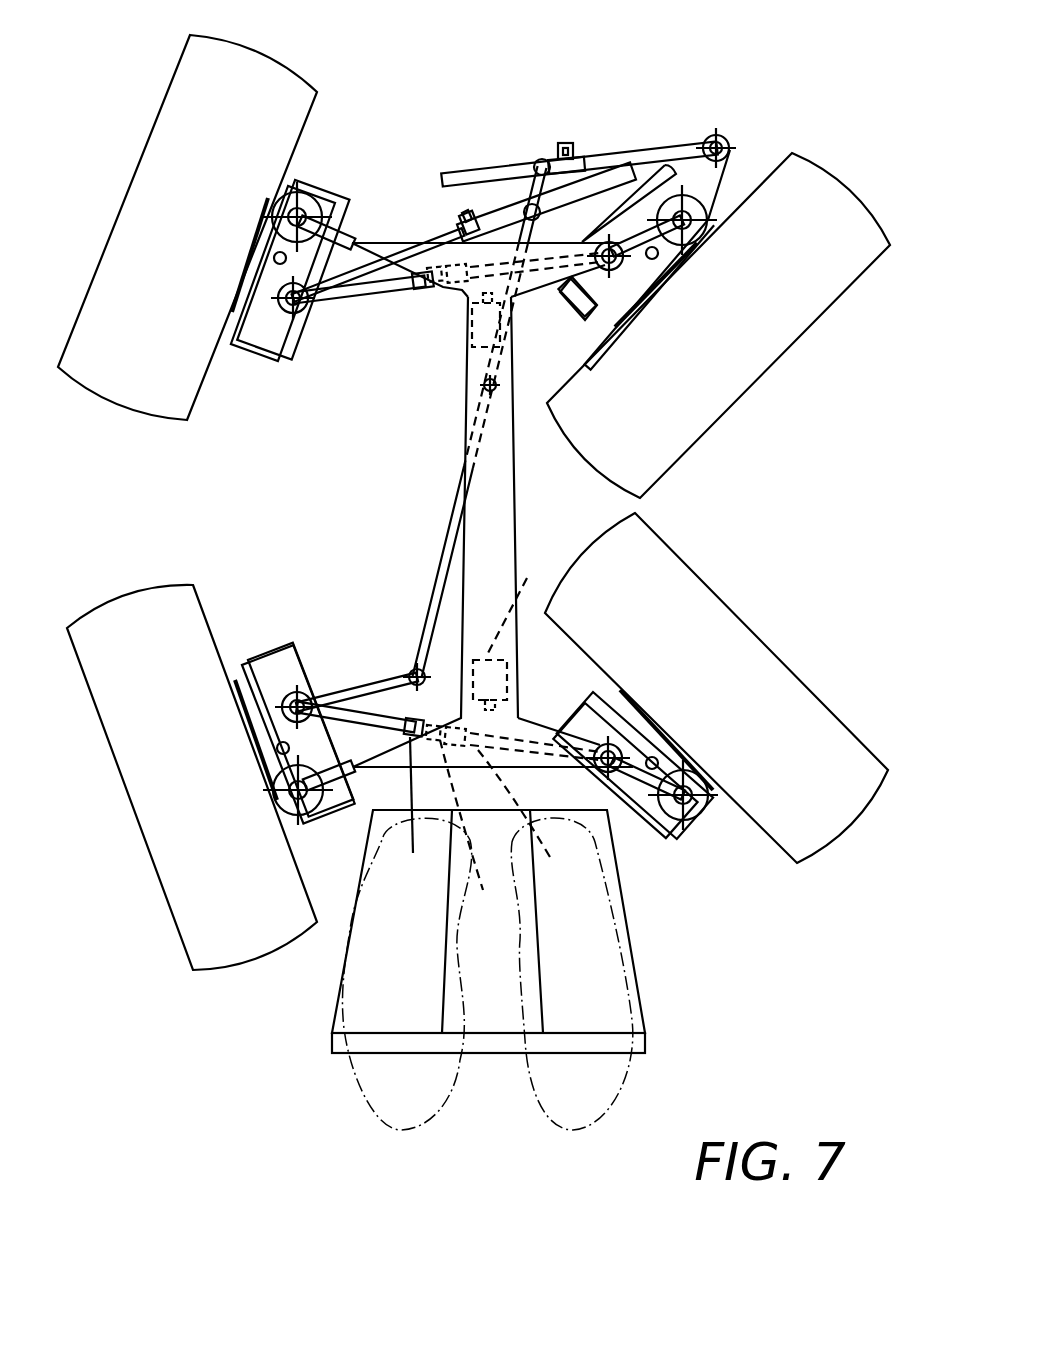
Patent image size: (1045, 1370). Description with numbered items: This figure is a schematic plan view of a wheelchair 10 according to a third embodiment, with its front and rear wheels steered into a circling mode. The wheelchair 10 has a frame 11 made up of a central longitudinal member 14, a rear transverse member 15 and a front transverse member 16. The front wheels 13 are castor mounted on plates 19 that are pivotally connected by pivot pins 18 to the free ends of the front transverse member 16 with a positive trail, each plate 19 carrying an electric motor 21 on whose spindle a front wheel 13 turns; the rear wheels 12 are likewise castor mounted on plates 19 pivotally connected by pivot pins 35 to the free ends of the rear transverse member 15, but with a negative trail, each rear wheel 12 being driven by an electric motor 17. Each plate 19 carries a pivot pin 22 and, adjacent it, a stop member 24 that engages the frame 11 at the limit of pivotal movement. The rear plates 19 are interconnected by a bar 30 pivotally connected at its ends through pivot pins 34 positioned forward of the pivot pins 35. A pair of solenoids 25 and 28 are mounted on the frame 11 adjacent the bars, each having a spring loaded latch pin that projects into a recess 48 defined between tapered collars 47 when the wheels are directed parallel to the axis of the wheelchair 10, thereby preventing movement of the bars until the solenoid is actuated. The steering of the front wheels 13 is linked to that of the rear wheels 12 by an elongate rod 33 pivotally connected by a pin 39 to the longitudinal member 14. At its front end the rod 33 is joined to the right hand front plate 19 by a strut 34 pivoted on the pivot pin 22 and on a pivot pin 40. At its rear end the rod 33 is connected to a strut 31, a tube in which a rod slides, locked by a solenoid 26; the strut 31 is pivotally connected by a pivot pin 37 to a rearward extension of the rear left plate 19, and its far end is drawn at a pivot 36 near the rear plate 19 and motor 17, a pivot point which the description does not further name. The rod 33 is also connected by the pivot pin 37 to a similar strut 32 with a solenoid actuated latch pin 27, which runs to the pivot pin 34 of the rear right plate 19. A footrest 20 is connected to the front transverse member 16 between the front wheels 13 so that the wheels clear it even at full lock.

The wheelchair 10 is at (790, 476).
The frame 11 is at (420, 499).
The rear wheels 12 is at (168, 132).
The front wheels 13 is at (198, 938).
The central longitudinal member 14 is at (495, 548).
The rear transverse member 15 is at (382, 238).
The front transverse member 16 is at (395, 758).
The electric motor 17 is at (652, 178).
The pivot pin 18 is at (290, 793).
The plate 19 is at (270, 345).
The footrest 20 is at (600, 1045).
The electric motor 21 is at (305, 665).
The pivot pin 22 is at (288, 704).
The stop member 24 is at (275, 748).
The solenoid 25 is at (523, 578).
The solenoid 26 is at (568, 140).
The solenoid actuated latch pin 27 is at (462, 212).
The solenoid 28 is at (470, 375).
The bar 30 is at (398, 292).
The strut 31 is at (474, 167).
The strut 32 is at (530, 205).
The elongate rod 33 is at (540, 160).
The strut / pivot pin 34 is at (305, 328).
The pivot pin 35 is at (305, 203).
The pivot 36 is at (722, 141).
The pivot pin 37 is at (540, 222).
The pin 39 is at (492, 395).
The pivot pin 40 is at (413, 670).
The tapered collars 47 is at (492, 812).
The recess 48 is at (470, 831).